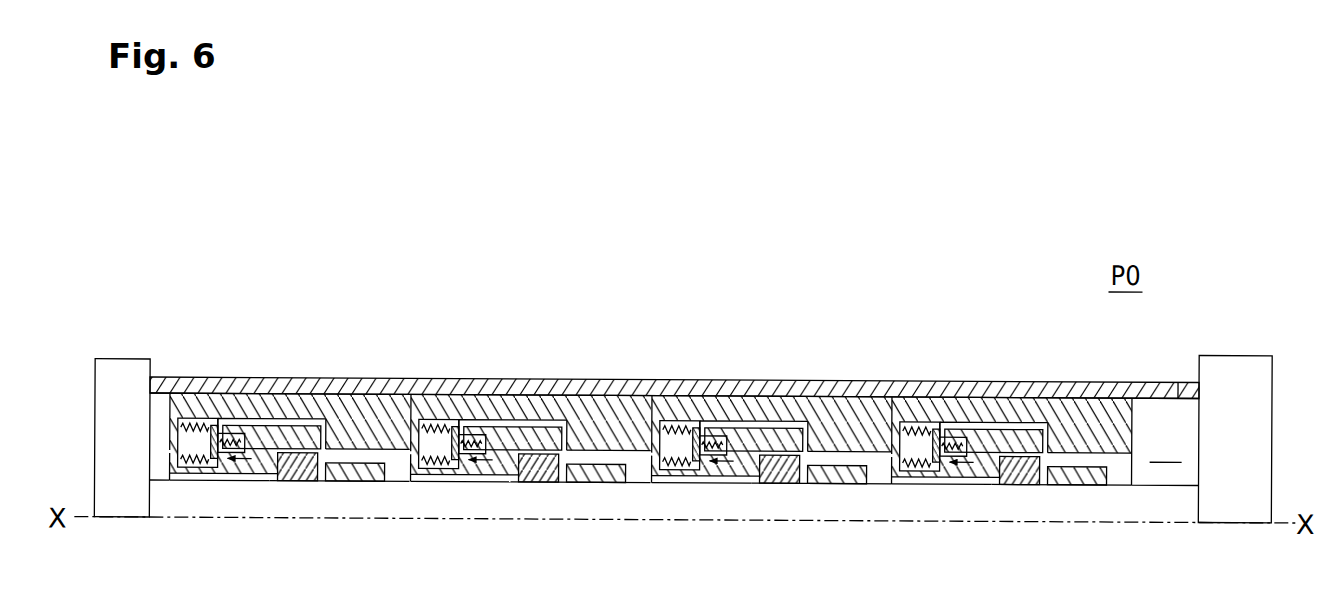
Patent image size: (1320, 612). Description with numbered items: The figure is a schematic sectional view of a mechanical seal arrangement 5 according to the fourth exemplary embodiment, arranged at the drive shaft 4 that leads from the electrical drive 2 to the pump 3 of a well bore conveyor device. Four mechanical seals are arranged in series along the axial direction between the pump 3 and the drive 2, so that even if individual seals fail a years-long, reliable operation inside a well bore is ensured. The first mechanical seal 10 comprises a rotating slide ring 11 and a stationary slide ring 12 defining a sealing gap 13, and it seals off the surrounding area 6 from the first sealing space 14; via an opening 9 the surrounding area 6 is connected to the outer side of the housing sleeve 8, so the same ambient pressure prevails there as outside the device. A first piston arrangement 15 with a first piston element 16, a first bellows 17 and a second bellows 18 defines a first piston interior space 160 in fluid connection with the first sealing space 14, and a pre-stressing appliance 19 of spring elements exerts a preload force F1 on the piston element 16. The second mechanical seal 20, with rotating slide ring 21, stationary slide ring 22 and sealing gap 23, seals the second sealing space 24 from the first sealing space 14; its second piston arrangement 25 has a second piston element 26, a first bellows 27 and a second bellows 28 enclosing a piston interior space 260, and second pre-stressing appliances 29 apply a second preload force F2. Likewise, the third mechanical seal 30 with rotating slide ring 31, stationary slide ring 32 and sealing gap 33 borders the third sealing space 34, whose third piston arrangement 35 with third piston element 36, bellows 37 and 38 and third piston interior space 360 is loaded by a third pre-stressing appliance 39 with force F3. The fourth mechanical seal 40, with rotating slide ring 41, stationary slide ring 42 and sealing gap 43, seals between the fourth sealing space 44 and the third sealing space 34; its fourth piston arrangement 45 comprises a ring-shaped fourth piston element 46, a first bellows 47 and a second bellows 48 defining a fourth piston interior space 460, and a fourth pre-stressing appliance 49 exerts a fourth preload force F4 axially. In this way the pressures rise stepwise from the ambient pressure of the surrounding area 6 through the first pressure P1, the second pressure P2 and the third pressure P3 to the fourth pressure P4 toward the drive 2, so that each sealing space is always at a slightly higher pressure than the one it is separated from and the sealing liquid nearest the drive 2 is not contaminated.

The electrical drive 2 is at (120, 436).
The pump 3 is at (1242, 372).
The drive shaft 4 is at (1167, 500).
The mechanical seal arrangement 5 is at (1034, 322).
The surrounding area 6 is at (1155, 412).
The housing sleeve 8 is at (1104, 384).
The opening 9 is at (1181, 388).
The first mechanical seal 10 is at (1090, 381).
The rotating slide ring 11 is at (1077, 522).
The stationary slide ring 12 is at (1015, 516).
The sealing gap 13 is at (1061, 531).
The first sealing space 14 is at (876, 396).
The first piston arrangement 15 is at (1012, 393).
The first piston element 16 is at (945, 515).
The first bellows 17 is at (911, 502).
The second bellows 18 is at (976, 386).
The pre-stressing appliance 19 is at (955, 382).
The second mechanical seal 20 is at (850, 379).
The rotating slide ring 21 is at (837, 520).
The stationary slide ring 22 is at (775, 515).
The sealing gap 23 is at (821, 530).
The second sealing space 24 is at (636, 394).
The second piston arrangement 25 is at (772, 392).
The second piston element 26 is at (705, 514).
The first bellows 27 is at (671, 501).
The second bellows 28 is at (736, 385).
The second pre-stressing appliance 29 is at (715, 381).
The third mechanical seal 30 is at (609, 378).
The rotating slide ring 31 is at (596, 519).
The stationary slide ring 32 is at (534, 514).
The sealing gap 33 is at (580, 529).
The third sealing space 34 is at (395, 393).
The third piston arrangement 35 is at (531, 390).
The third piston element 36 is at (464, 512).
The first bellows 37 is at (430, 499).
The second bellows 38 is at (495, 383).
The third pre-stressing appliance 39 is at (474, 380).
The fourth mechanical seal 40 is at (368, 377).
The rotating slide ring 41 is at (355, 518).
The stationary slide ring 42 is at (293, 513).
The sealing gap 43 is at (339, 528).
The fourth sealing space 44 is at (154, 392).
The fourth piston arrangement 45 is at (290, 389).
The fourth piston element 46 is at (223, 511).
The first bellows 47 is at (189, 498).
The second bellows 48 is at (254, 382).
The fourth pre-stressing appliance 49 is at (233, 378).
The first piston interior space 160 is at (901, 517).
The piston interior space 260 is at (661, 515).
The third piston interior space 360 is at (420, 514).
The fourth piston interior space 460 is at (179, 513).
The preload force F1 is at (967, 537).
The second preload force F2 is at (727, 536).
The preload force F3 is at (486, 535).
The fourth preload force F4 is at (245, 533).
The first pressure P1 is at (902, 346).
The second pressure P2 is at (662, 345).
The third pressure P3 is at (421, 343).
The pressure P4 is at (180, 342).